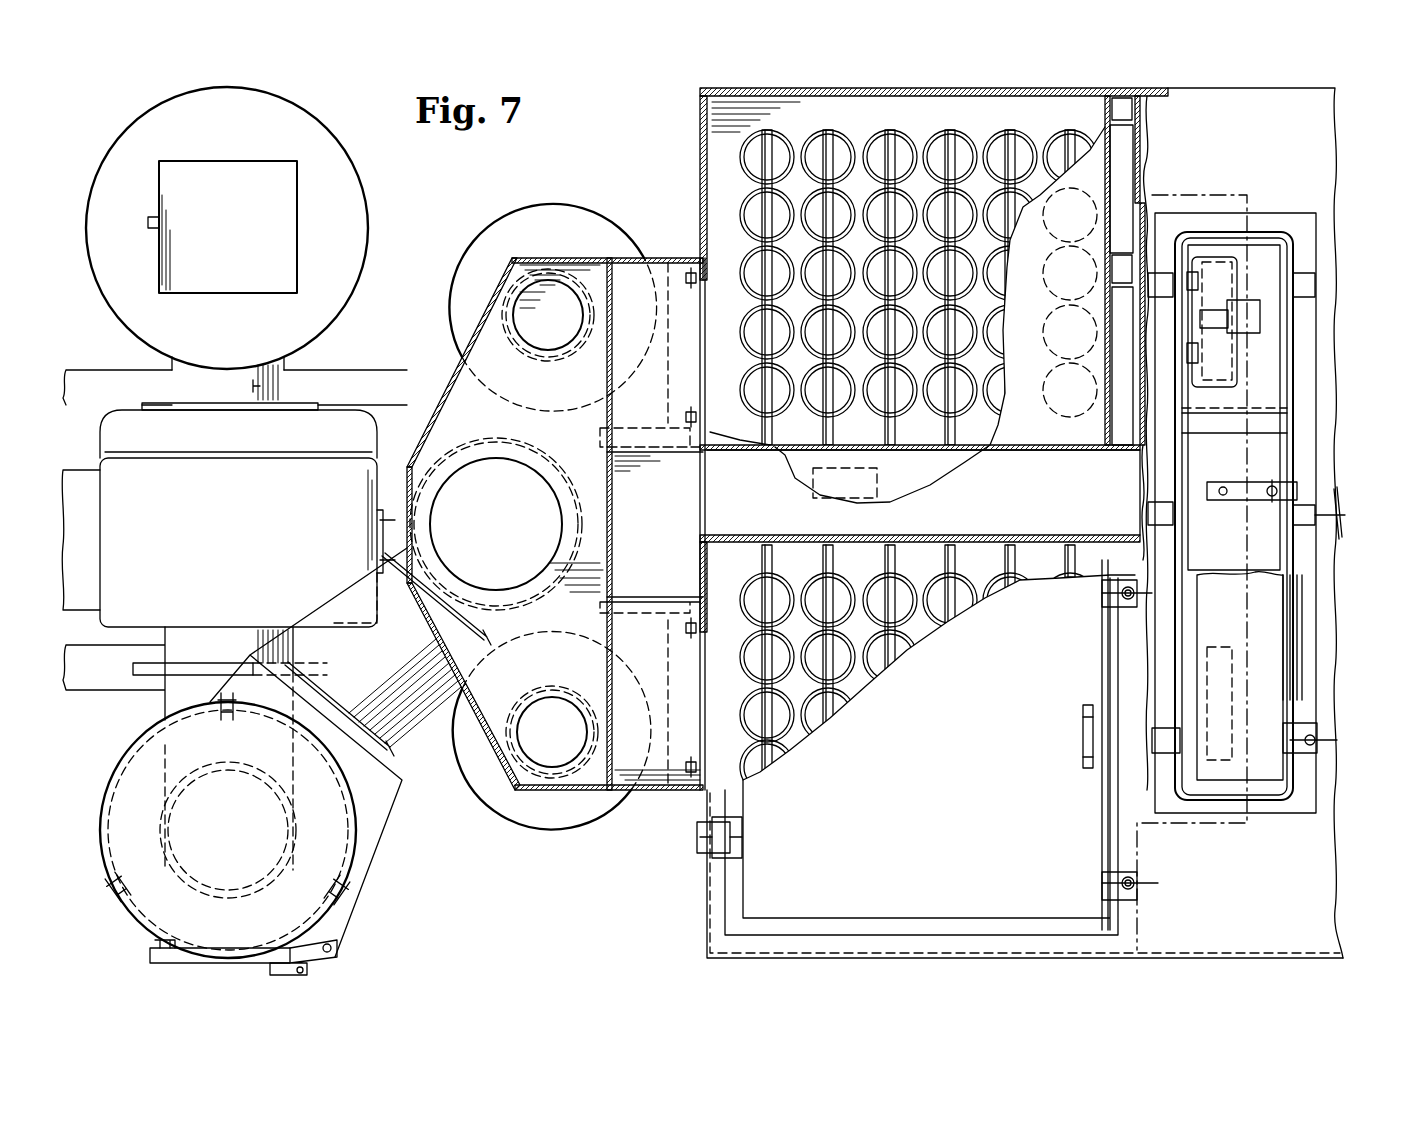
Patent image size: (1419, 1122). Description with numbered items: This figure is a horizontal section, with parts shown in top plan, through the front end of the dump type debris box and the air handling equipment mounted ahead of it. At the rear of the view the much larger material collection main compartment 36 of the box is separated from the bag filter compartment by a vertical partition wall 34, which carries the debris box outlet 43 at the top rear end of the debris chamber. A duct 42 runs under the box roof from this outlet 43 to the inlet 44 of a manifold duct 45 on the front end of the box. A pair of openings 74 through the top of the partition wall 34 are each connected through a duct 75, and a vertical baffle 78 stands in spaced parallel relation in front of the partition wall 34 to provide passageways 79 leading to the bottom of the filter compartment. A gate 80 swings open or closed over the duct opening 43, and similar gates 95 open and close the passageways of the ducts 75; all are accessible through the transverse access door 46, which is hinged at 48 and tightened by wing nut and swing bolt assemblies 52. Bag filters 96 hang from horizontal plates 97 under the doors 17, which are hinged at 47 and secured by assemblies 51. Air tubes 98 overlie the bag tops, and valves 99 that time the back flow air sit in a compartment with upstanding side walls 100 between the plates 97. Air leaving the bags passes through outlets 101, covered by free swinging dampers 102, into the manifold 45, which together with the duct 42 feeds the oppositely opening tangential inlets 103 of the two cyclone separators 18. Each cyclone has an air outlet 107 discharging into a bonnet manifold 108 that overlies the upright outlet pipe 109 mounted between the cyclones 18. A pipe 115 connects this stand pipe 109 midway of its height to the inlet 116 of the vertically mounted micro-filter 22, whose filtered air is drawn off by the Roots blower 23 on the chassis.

The doors 17 is at (826, 560).
The cyclone separators 18 is at (487, 247).
The micro-filter 22 is at (364, 865).
The Roots blower 23 is at (250, 533).
The partition wall 34 is at (1137, 167).
The main compartment 36 is at (1313, 890).
The duct 42 is at (917, 520).
The debris box outlet 43 is at (1138, 472).
The inlet 44 is at (553, 500).
The manifold duct 45 is at (648, 257).
The access door 46 is at (1277, 678).
The hinge 47 is at (697, 843).
The hinge 48 is at (1160, 273).
The wing nut and swing bolt assemblies 51 is at (1115, 595).
The wing nut and swing bolt assemblies 52 is at (1340, 742).
The openings 74 is at (1150, 353).
The duct 75 is at (1247, 195).
The baffle 78 is at (1110, 205).
The passageways 79 is at (1105, 410).
The gate 80 is at (1256, 541).
The gates 95 is at (1228, 361).
The bag filters 96 is at (918, 254).
The horizontal plates 97 is at (745, 132).
The air tubes 98 is at (892, 137).
The valves 99 is at (845, 476).
The side walls 100 is at (907, 450).
The outlets 101 is at (702, 330).
The dampers 102 is at (697, 343).
The tangential inlets 103 is at (647, 450).
The air outlet 107 is at (564, 329).
The bonnet manifold 108 is at (462, 362).
The outlet pipe 109 is at (519, 466).
The pipe 115 is at (390, 668).
The inlet 116 is at (393, 742).